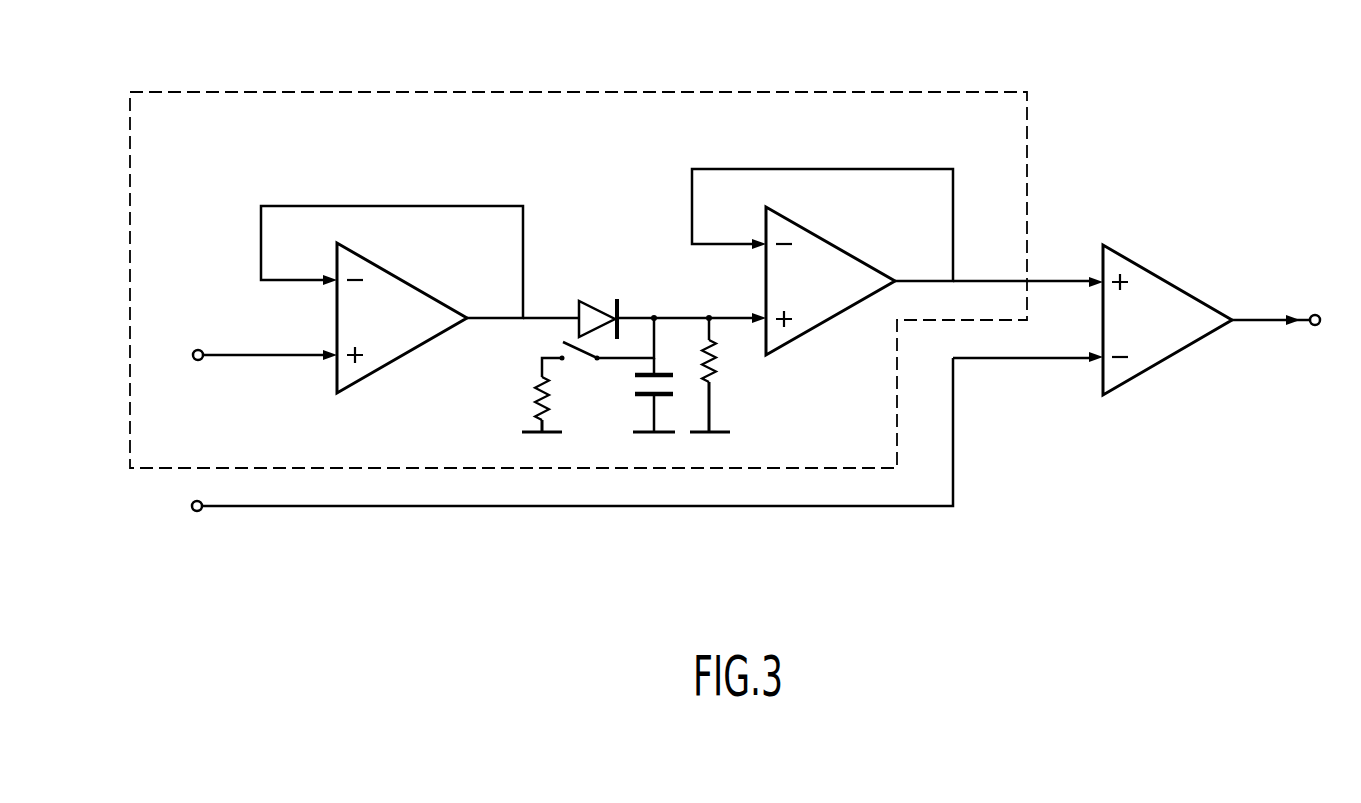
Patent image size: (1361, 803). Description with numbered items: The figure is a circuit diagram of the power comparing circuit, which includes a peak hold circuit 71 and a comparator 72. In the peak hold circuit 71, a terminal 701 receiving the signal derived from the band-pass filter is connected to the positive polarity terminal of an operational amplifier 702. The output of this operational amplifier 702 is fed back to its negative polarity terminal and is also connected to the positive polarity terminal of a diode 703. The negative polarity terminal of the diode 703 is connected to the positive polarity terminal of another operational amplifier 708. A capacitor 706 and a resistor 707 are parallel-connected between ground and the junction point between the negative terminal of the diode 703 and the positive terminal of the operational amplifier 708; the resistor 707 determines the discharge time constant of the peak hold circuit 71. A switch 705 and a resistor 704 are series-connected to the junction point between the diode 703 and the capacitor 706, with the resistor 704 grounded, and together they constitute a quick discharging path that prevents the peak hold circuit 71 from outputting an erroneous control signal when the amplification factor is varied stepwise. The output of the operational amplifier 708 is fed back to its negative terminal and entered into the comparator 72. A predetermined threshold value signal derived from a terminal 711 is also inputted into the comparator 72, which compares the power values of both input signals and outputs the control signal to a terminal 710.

The peak hold circuit 71 is at (518, 90).
The comparator 72 is at (1148, 370).
The terminal 701 is at (199, 361).
The operational amplifier 702 is at (400, 362).
The diode 703 is at (578, 298).
The resistor 704 is at (535, 385).
The switch 705 is at (565, 352).
The capacitor 706 is at (633, 380).
The resistor 707 is at (722, 360).
The operational amplifier 708 is at (840, 320).
The terminal 710 is at (1318, 326).
The terminal 711 is at (198, 512).